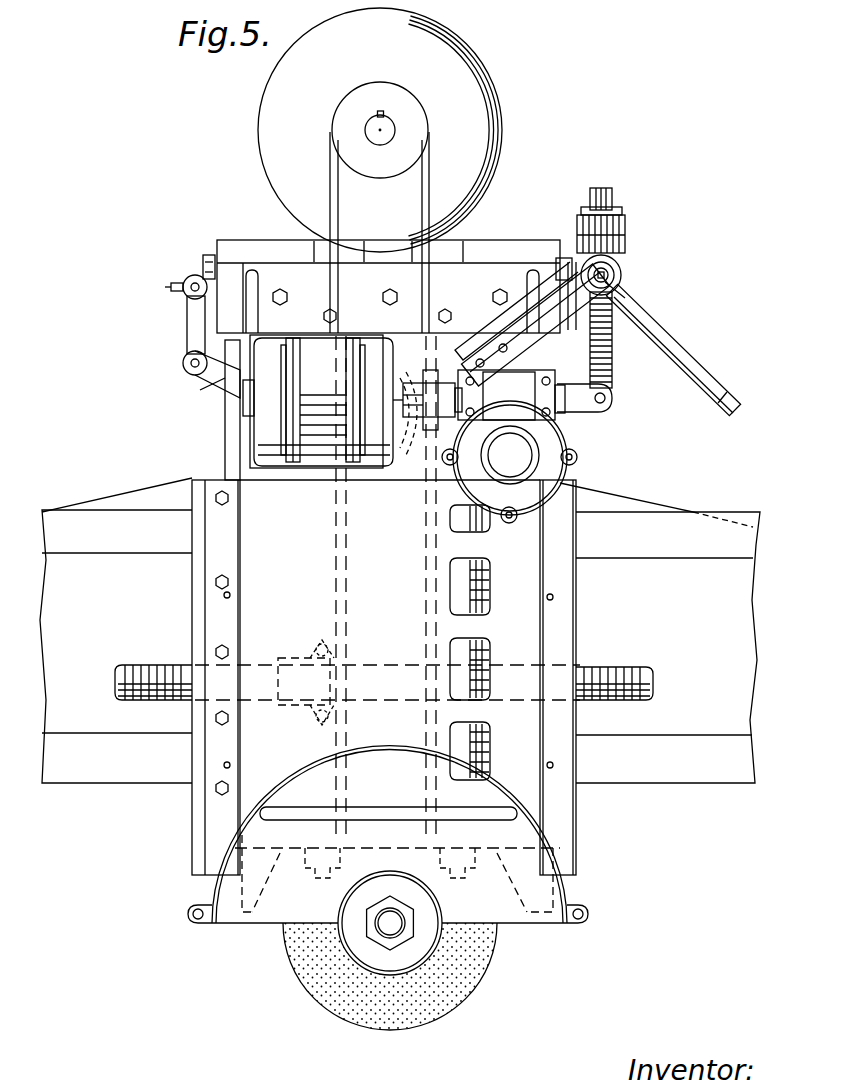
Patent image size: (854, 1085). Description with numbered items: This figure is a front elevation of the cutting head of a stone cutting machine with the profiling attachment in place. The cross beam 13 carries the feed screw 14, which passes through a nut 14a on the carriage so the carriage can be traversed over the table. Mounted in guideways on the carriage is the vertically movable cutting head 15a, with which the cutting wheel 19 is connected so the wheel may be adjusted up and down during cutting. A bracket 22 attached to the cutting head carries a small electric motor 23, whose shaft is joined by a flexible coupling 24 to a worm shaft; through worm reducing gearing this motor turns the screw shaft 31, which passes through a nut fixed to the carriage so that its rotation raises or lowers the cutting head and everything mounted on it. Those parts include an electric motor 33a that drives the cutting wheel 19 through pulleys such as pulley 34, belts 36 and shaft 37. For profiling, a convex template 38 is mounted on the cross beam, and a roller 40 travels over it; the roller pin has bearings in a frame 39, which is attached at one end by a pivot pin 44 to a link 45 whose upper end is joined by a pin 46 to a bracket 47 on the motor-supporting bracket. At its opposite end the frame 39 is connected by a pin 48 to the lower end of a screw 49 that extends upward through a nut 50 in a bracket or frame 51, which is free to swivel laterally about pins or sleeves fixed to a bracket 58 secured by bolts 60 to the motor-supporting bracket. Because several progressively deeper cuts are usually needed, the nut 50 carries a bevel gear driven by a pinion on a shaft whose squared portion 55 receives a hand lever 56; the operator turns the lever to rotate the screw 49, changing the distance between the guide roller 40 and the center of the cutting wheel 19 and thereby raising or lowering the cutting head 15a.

The cross beam 13 is at (725, 527).
The feed screw 14 is at (146, 664).
The nut 14a is at (292, 660).
The cutting head 15a is at (310, 550).
The cutting wheel 19 is at (305, 948).
The bracket 22 is at (266, 352).
The electric motor 23 is at (277, 418).
The flexible coupling 24 is at (422, 376).
The screw shaft 31 is at (482, 592).
The electric motor 33a is at (268, 117).
The pulley 34 is at (400, 103).
The belts 36 is at (420, 204).
The shaft 37 is at (405, 921).
The template or pattern plate 38 is at (612, 498).
The frame 39 is at (222, 378).
The roller 40 is at (400, 462).
The pivot pin 44 is at (190, 363).
The link 45 is at (186, 314).
The pin 46 is at (190, 284).
The bracket 47 is at (210, 260).
The pin 48 is at (607, 399).
The screw 49 is at (606, 197).
The nut 50 is at (622, 211).
The bracket or frame 51 is at (626, 242).
The squared portion 55 is at (615, 277).
The hand lever 56 is at (686, 352).
The bracket 58 is at (571, 260).
The bolts 60 is at (564, 266).